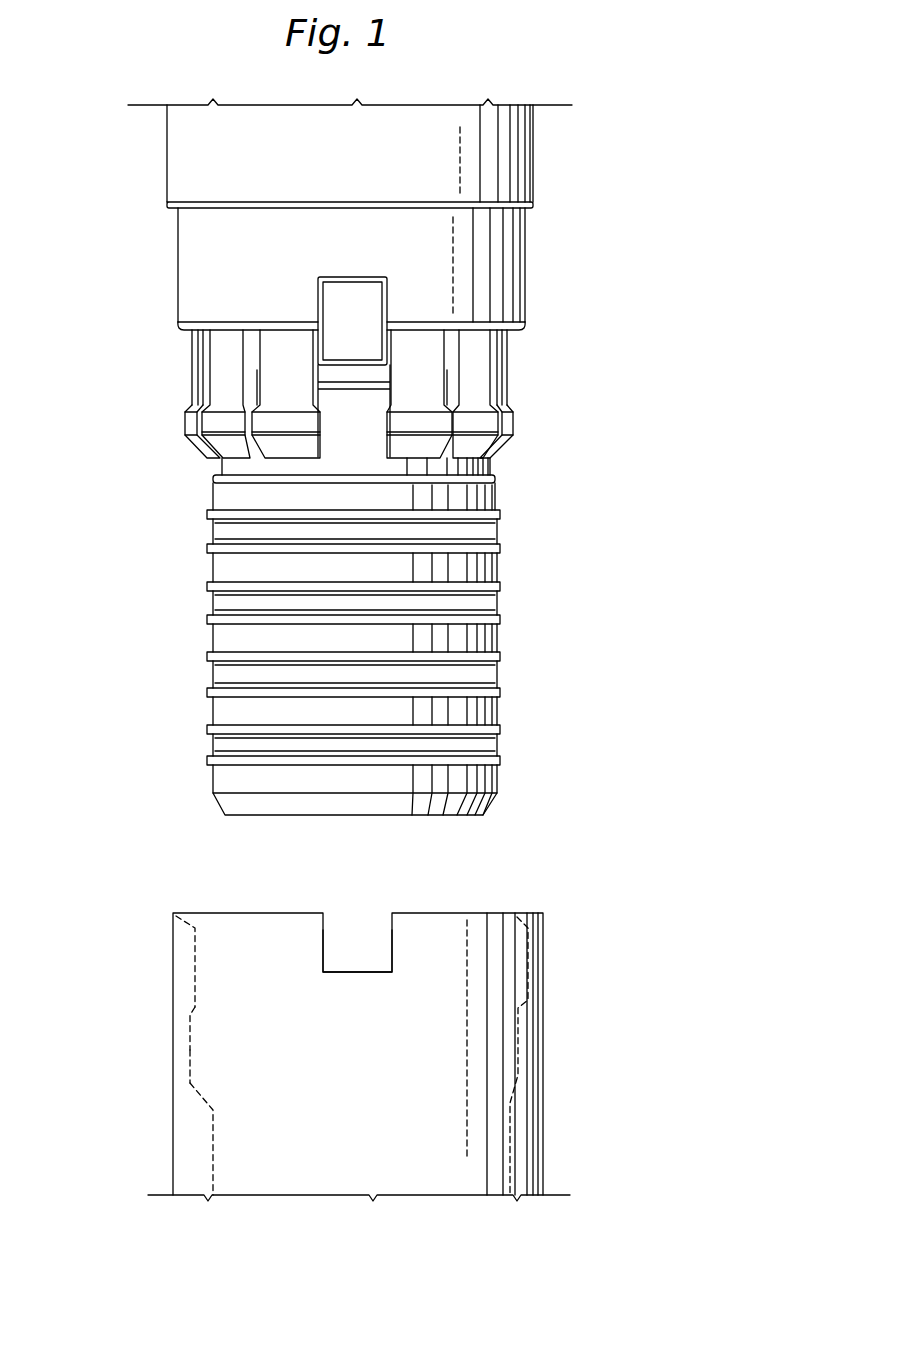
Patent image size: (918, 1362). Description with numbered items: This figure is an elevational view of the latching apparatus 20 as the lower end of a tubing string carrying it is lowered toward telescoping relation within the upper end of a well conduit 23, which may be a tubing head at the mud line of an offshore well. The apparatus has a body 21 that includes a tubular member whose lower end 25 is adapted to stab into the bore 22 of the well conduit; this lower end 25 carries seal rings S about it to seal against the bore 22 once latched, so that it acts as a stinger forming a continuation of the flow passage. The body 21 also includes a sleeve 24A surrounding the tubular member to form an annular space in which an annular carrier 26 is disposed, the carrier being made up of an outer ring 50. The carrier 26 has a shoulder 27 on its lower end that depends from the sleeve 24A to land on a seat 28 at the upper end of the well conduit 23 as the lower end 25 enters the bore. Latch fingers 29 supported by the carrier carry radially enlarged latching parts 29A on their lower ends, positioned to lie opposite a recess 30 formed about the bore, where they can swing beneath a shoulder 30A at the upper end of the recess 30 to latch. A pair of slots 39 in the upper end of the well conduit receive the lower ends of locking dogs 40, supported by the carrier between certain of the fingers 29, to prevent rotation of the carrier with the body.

The apparatus 20 is at (512, 528).
The body 21 is at (535, 186).
The bore 22 is at (215, 1123).
The well conduit 23 is at (173, 1000).
The sleeve 24A is at (167, 164).
The lower end 25 is at (500, 713).
The annular carrier 26 is at (177, 250).
The shoulder 27 is at (527, 330).
The seat 28 is at (203, 912).
The fingers 29 is at (508, 392).
The latching parts 29A is at (185, 430).
The recess 30 is at (192, 1053).
The shoulder 30A is at (195, 1010).
The slots 39 is at (325, 930).
The locking dogs 40 is at (366, 336).
The outer ring 50 is at (395, 245).
The seal rings S is at (503, 619).